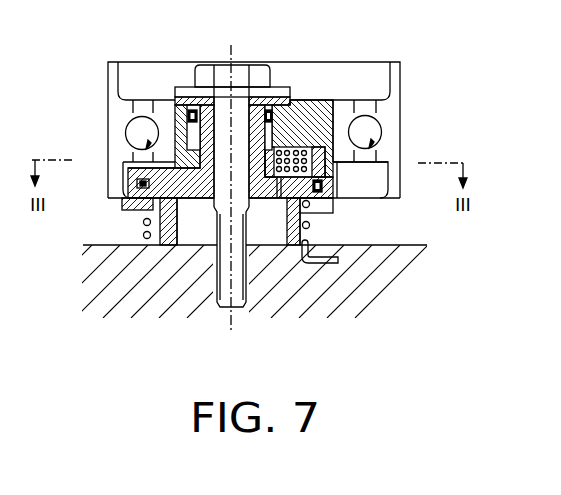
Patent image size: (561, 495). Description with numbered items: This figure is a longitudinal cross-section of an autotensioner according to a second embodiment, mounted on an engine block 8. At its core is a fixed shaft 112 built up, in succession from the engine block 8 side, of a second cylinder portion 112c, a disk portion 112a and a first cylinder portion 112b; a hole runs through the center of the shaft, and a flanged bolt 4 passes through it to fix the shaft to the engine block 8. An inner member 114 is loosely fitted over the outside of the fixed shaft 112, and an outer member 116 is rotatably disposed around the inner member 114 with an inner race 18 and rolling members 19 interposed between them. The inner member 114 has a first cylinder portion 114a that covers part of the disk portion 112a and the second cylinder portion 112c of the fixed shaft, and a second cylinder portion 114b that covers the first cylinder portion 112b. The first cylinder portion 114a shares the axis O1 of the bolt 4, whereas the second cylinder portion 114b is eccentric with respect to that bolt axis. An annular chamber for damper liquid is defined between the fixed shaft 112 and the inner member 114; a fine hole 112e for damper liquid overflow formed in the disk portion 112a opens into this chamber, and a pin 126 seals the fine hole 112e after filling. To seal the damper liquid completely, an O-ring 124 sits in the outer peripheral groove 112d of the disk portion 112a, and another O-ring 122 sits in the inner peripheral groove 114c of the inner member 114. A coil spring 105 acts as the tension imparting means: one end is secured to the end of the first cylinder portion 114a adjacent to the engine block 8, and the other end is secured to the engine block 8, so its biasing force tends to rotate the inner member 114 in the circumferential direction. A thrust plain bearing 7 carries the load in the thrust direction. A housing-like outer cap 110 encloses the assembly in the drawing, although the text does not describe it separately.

The flanged bolt 4 is at (236, 72).
The thrust plain bearing 7 is at (188, 112).
The engine block 8 is at (107, 300).
The inner race 18 is at (380, 153).
The rolling members 19 is at (372, 124).
The coil spring 105 is at (310, 225).
The housing 110 is at (412, 63).
The fixed shaft 112 is at (258, 108).
The disk portion 112a is at (136, 189).
The first cylinder portion 112b is at (198, 98).
The second cylinder portion 112c is at (167, 246).
The outer peripheral groove 112d is at (130, 210).
The fine hole 112e is at (244, 108).
The inner member 114 is at (322, 114).
The first cylinder portion 114a is at (125, 172).
The second cylinder portion 114b is at (335, 103).
The inner peripheral groove 114c is at (305, 112).
The outer member 116 is at (388, 130).
The O-ring 122 is at (187, 117).
The O-ring 124 is at (322, 188).
The pin 126 is at (272, 200).
The axis O1 is at (229, 62).